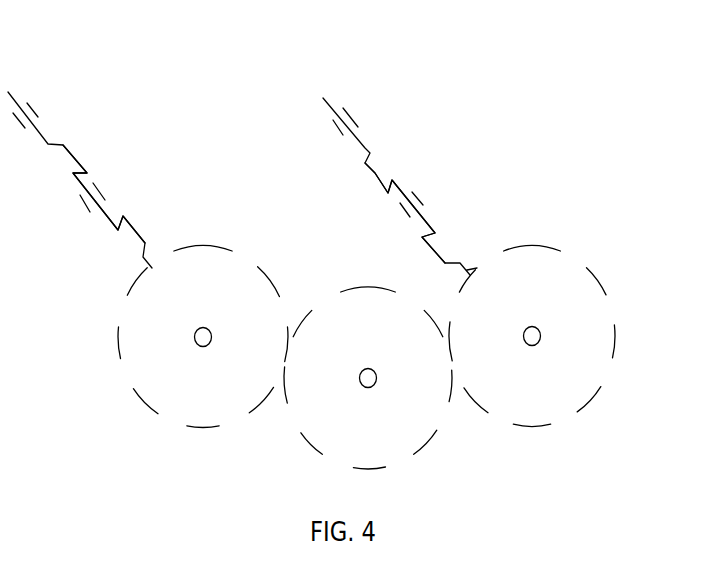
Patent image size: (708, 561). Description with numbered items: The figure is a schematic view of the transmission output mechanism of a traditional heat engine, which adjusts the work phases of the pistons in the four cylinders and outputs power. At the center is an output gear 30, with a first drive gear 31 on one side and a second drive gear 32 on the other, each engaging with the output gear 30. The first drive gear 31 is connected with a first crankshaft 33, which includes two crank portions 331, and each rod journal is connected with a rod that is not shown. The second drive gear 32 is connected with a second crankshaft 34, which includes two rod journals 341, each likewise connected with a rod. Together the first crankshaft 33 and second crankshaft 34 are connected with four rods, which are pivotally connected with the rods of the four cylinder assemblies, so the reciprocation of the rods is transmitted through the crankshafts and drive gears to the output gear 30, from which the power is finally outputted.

The output gear 30 is at (327, 433).
The first drive gear 31 is at (135, 327).
The second drive gear 32 is at (582, 334).
The first crankshaft 33 is at (8, 92).
The crank portion 331 is at (72, 155).
The second crankshaft 34 is at (325, 99).
The rod journal 341 is at (375, 172).